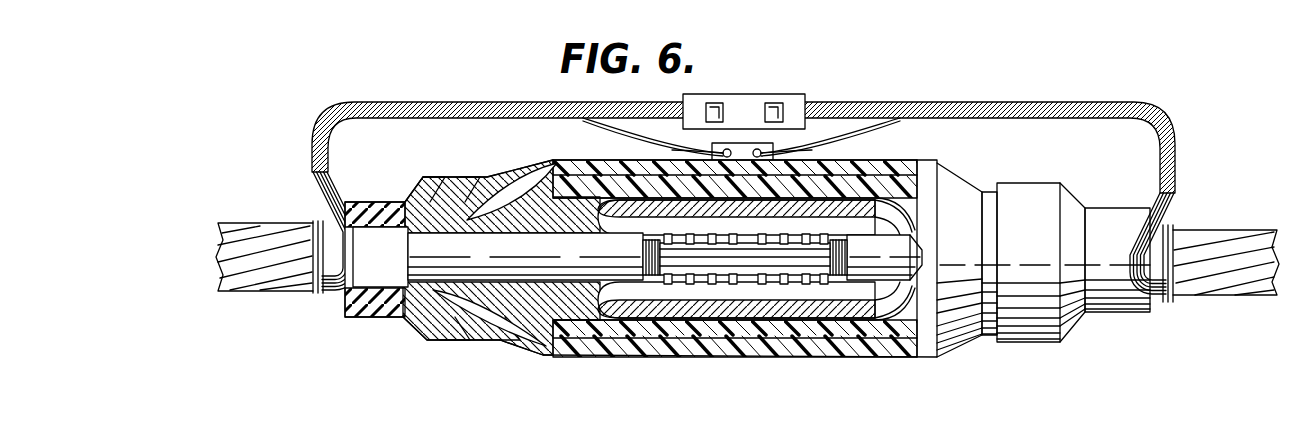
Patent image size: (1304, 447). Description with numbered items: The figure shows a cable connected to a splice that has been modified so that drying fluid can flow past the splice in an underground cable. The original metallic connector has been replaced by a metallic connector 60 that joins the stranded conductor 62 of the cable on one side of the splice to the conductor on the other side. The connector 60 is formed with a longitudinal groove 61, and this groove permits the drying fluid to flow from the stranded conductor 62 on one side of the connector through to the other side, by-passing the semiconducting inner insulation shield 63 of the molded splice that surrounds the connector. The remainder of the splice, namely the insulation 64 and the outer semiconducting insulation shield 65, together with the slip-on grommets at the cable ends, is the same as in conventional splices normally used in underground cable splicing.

The metallic connector 60 is at (633, 306).
The longitudinal groove 61 is at (836, 259).
The stranded conductor 62 is at (633, 226).
The semiconducting inner insulation shield 63 is at (862, 200).
The insulation 64 is at (538, 309).
The outer semiconducting insulation shield 65 is at (541, 182).